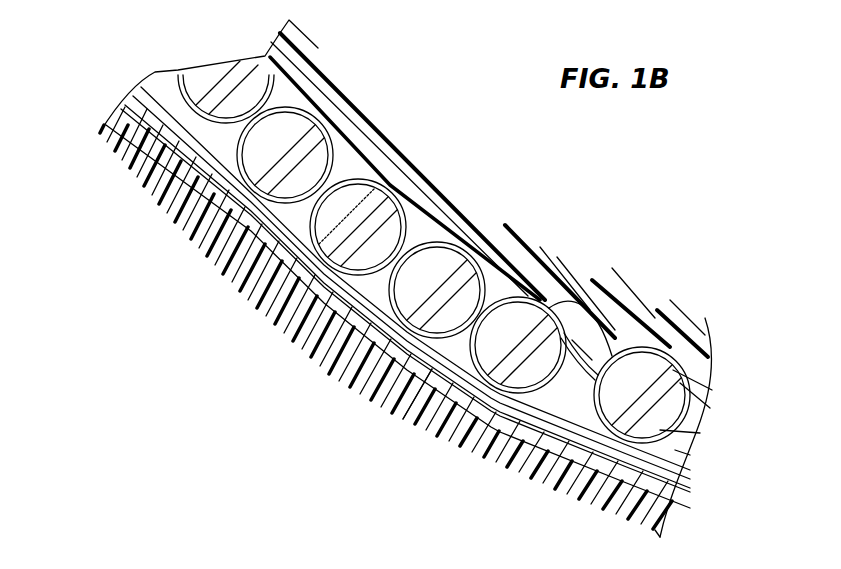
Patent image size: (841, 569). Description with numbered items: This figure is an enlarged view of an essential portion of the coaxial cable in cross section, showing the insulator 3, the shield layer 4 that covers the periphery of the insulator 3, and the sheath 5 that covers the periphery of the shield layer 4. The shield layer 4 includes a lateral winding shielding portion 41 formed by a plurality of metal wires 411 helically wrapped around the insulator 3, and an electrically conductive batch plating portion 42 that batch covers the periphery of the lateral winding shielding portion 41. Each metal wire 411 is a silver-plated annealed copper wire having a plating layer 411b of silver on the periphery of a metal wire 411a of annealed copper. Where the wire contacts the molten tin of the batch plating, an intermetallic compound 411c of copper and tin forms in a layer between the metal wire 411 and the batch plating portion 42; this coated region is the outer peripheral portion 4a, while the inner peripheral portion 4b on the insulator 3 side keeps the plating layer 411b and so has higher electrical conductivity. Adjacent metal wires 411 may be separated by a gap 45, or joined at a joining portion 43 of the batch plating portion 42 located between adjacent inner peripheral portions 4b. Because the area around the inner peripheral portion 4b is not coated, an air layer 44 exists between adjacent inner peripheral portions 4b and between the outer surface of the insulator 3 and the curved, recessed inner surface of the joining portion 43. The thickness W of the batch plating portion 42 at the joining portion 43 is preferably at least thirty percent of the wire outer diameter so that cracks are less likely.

The insulator 3 is at (672, 333).
The shield layer 4 is at (310, 98).
The outer peripheral portion 4a is at (505, 398).
The inner peripheral portion 4b is at (541, 297).
The sheath 5 is at (643, 503).
The lateral winding shielding portion 41 is at (434, 252).
The batch plating portion 42 is at (590, 450).
The joining portion 43 is at (595, 345).
The air layer 44 is at (572, 332).
The gap 45 is at (699, 425).
The metal wire 411 is at (397, 320).
The metal wire 411a is at (447, 277).
The plating layer 411b is at (447, 278).
The intermetallic compound 411c is at (417, 327).
The thickness W is at (576, 422).